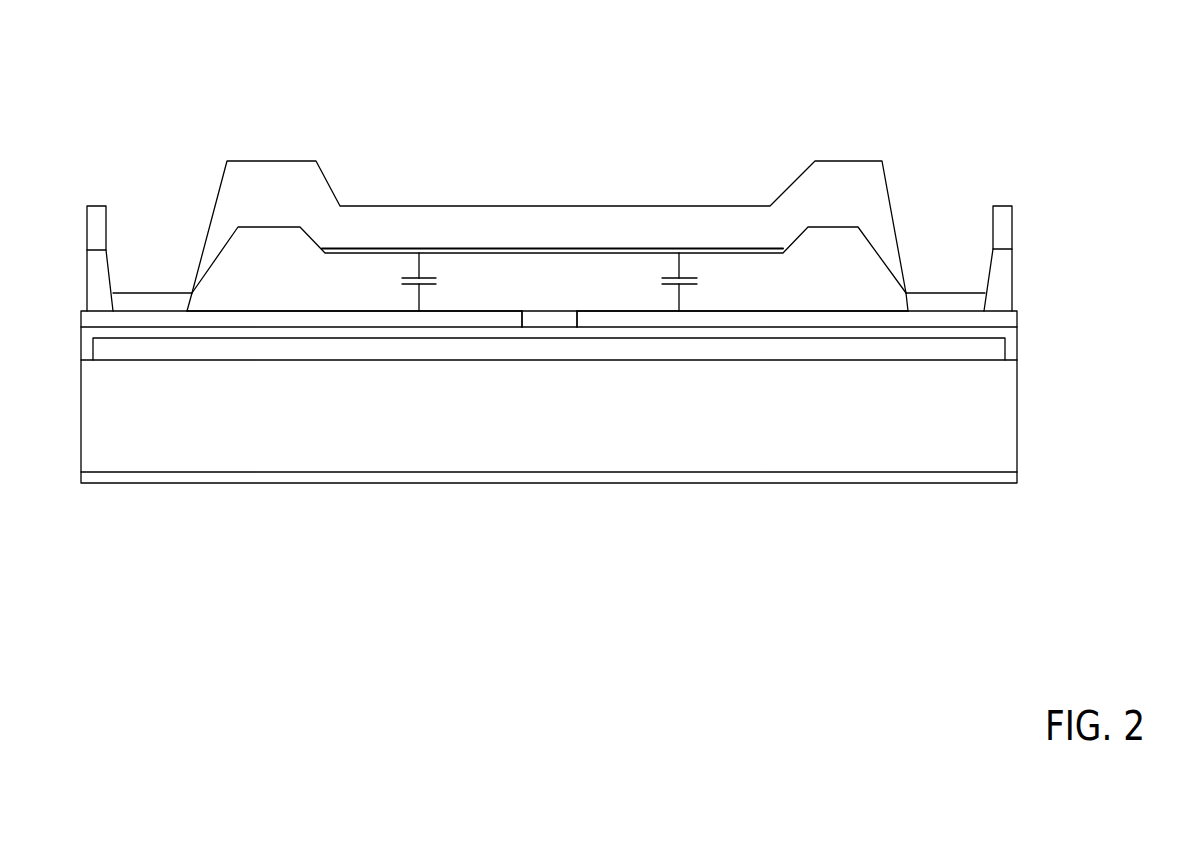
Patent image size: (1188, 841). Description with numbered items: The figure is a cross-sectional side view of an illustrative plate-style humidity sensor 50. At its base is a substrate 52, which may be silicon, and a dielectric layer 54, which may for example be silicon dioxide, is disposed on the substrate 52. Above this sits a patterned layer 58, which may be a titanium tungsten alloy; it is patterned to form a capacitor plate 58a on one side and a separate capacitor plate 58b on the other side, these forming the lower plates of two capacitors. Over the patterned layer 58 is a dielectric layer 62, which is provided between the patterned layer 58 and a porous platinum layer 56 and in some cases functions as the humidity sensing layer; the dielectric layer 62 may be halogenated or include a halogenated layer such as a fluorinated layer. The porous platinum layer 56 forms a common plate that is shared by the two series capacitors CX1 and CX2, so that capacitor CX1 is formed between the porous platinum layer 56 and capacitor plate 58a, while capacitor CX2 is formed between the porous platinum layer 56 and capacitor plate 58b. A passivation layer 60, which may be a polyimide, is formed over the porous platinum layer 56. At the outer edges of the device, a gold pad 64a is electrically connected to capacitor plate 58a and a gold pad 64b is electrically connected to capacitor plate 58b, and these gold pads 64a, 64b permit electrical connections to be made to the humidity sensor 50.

The humidity sensor 50 is at (207, 98).
The substrate 52 is at (997, 432).
The dielectric layer 54 is at (995, 352).
The porous platinum layer 56 is at (715, 248).
The patterned layer 58 is at (857, 307).
The capacitor plate 58a is at (313, 317).
The capacitor plate 58b is at (793, 317).
The passivation layer 60 is at (408, 225).
The dielectric layer 62 is at (813, 285).
The gold pad 64a is at (150, 299).
The gold pad 64b is at (955, 300).
The capacitor CX1 is at (442, 282).
The capacitor CX2 is at (653, 282).